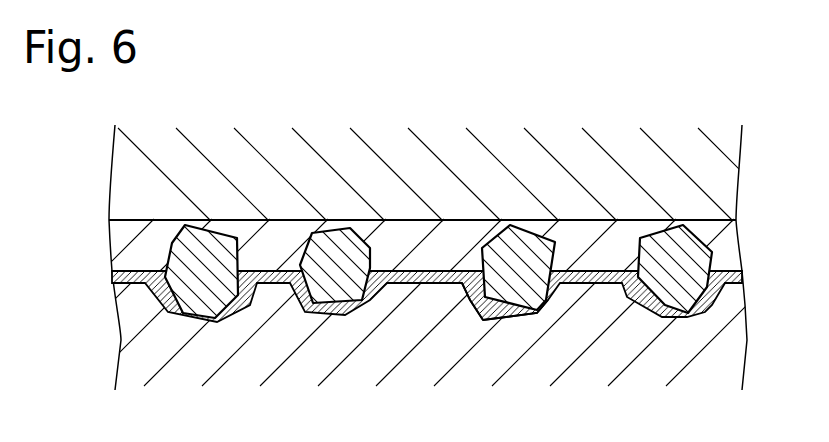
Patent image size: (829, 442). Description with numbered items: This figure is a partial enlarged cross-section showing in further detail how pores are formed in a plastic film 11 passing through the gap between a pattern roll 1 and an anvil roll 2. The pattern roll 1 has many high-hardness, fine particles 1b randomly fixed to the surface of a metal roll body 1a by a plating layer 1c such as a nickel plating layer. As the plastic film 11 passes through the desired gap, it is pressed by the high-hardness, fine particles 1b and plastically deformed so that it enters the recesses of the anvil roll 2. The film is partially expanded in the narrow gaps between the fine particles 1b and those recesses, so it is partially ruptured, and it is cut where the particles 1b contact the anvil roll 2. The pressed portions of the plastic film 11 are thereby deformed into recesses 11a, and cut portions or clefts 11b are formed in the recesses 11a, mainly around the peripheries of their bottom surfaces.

The pattern roll 1 is at (723, 162).
The metal roll body 1a is at (423, 173).
The high-hardness, fine particles 1b is at (195, 260).
The plating layer 1c is at (728, 252).
The anvil roll 2 is at (725, 342).
The plastic film 11 is at (115, 278).
The recesses 11a is at (480, 273).
The cut portions (clefts) 11b is at (537, 308).